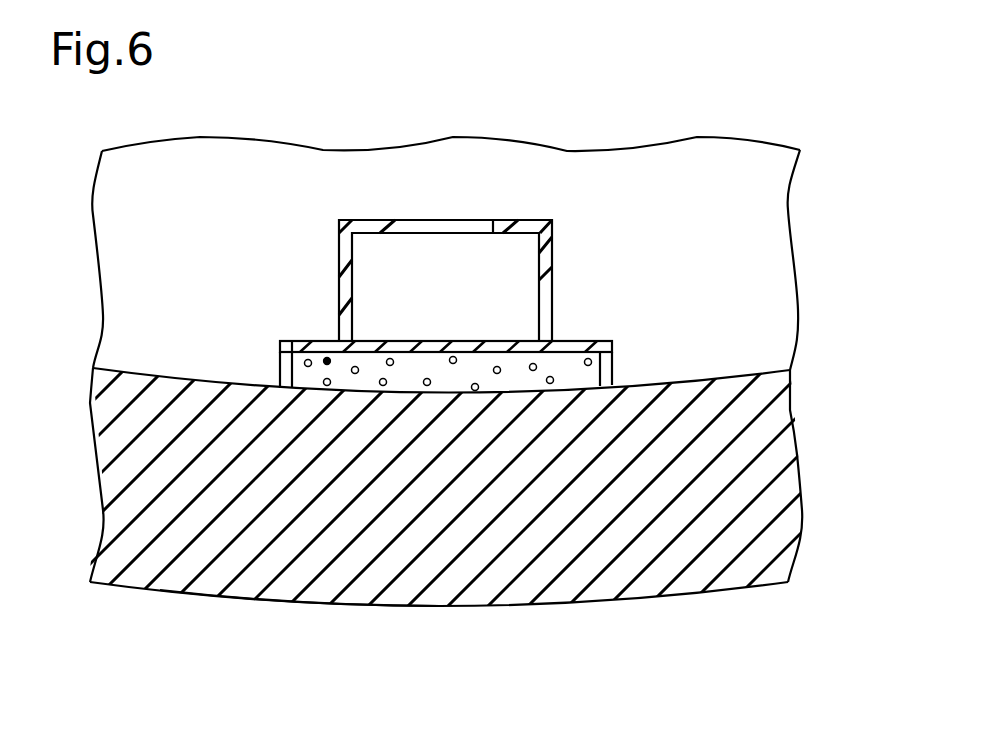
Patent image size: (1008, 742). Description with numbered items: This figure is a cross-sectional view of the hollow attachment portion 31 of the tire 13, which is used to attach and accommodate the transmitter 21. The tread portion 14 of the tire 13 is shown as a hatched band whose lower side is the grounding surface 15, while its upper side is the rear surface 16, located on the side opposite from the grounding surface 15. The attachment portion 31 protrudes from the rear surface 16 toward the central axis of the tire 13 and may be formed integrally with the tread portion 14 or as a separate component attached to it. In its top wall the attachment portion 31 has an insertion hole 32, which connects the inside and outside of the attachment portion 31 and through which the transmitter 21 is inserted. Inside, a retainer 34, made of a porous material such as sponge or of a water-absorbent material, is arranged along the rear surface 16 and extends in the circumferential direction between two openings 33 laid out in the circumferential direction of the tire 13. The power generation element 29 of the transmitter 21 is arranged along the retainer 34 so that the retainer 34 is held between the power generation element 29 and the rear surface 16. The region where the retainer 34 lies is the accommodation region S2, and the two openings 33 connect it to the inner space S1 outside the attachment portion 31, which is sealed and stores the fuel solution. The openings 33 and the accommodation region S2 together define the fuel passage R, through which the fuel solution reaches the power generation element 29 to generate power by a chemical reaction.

The tire 13 is at (504, 493).
The tread portion 14 is at (607, 595).
The grounding surface 15 is at (433, 607).
The rear surface 16 is at (742, 372).
The transmitter 21 is at (444, 280).
The power generation element 29 is at (493, 345).
The attachment portion 31 is at (553, 270).
The insertion hole 32 is at (404, 228).
The openings 33 is at (282, 357).
The retainer 34 is at (420, 359).
The fuel passage R is at (298, 352).
The inner space S1 is at (715, 256).
The accommodation region S2 is at (327, 357).